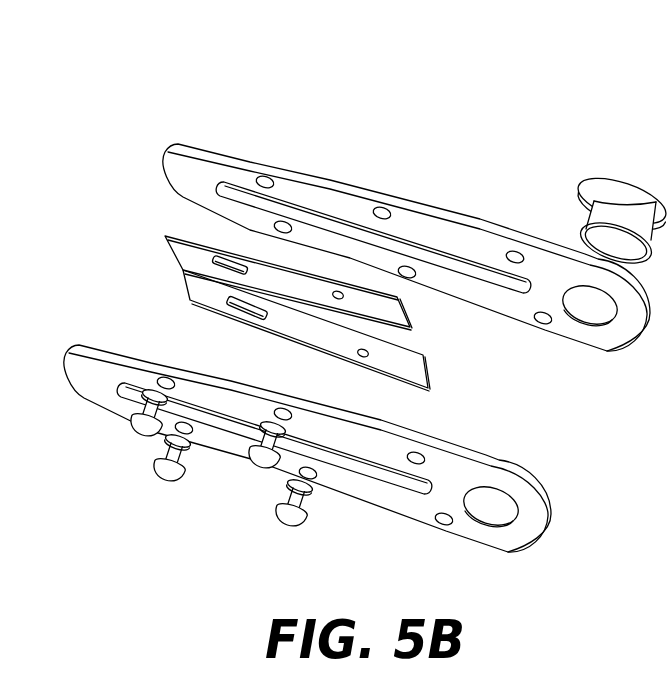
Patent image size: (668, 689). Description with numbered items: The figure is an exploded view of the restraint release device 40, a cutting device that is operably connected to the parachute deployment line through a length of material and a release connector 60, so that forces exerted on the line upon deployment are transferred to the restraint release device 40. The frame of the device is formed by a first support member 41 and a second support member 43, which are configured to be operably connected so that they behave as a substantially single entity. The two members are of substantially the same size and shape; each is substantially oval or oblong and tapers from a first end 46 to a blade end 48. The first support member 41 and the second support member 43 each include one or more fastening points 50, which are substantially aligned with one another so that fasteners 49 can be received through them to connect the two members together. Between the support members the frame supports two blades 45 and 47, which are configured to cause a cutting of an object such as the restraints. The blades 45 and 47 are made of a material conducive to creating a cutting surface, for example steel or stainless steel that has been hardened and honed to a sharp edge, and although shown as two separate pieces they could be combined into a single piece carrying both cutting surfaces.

The restraint release device 40 is at (524, 51).
The first support member 41 is at (86, 369).
The second support member 43 is at (210, 152).
The blade 45 is at (424, 372).
The first end 46 is at (428, 486).
The blade 47 is at (408, 312).
The blade end 48 is at (138, 416).
The fasteners 49 is at (279, 513).
The fastening points 50 is at (378, 207).
The release connector 60 is at (640, 187).